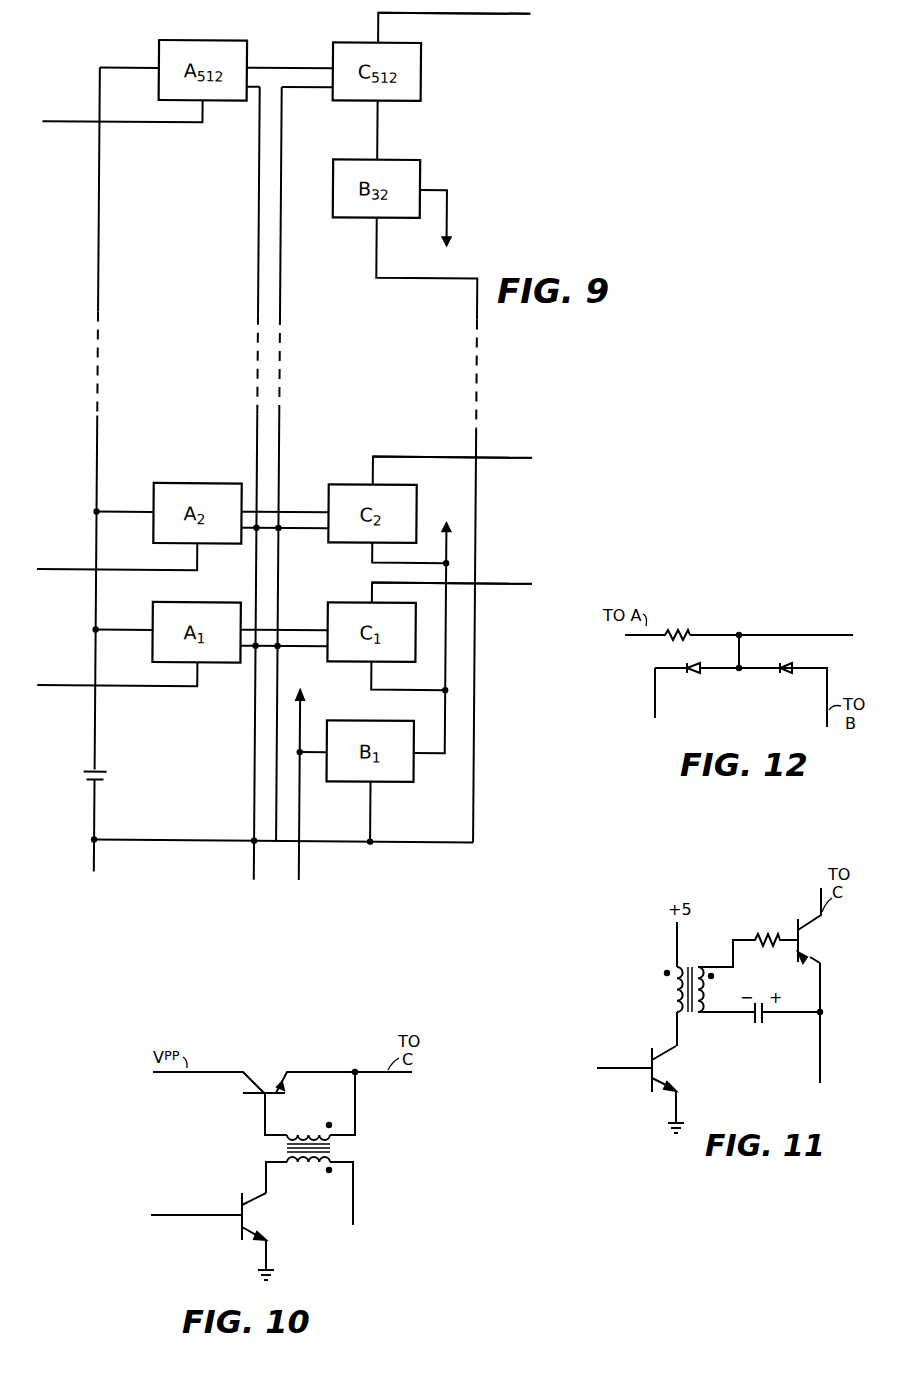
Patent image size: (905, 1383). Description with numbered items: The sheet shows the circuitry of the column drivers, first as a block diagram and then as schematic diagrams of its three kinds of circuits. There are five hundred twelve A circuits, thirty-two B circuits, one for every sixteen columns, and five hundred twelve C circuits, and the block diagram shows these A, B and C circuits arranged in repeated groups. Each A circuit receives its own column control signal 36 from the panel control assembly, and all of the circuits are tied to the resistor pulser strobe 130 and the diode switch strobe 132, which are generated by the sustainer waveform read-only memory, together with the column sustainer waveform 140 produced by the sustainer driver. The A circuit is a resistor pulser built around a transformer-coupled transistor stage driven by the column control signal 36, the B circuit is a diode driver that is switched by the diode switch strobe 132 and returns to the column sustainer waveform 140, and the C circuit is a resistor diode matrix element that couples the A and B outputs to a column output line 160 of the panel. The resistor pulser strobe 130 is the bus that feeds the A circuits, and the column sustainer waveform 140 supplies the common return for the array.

In FIG. 9, the column control signal 36 is at (73, 122).
In FIG. 10, the column control signal 36 is at (191, 1212).
In FIG. 9, the output line 160 is at (470, 15).
In FIG. 12, the output line 160 is at (835, 633).
In FIG. 9, the column sustainer waveform 140 is at (118, 851).
In FIG. 12, the column sustainer waveform 140 is at (657, 702).
In FIG. 11, the column sustainer waveform 140 is at (822, 1064).
In FIG. 9, the resistor pulser strobe 130 is at (254, 853).
In FIG. 10, the resistor pulser strobe 130 is at (355, 1215).
In FIG. 9, the diode switch strobe 132 is at (304, 859).
In FIG. 11, the diode switch strobe 132 is at (620, 1070).